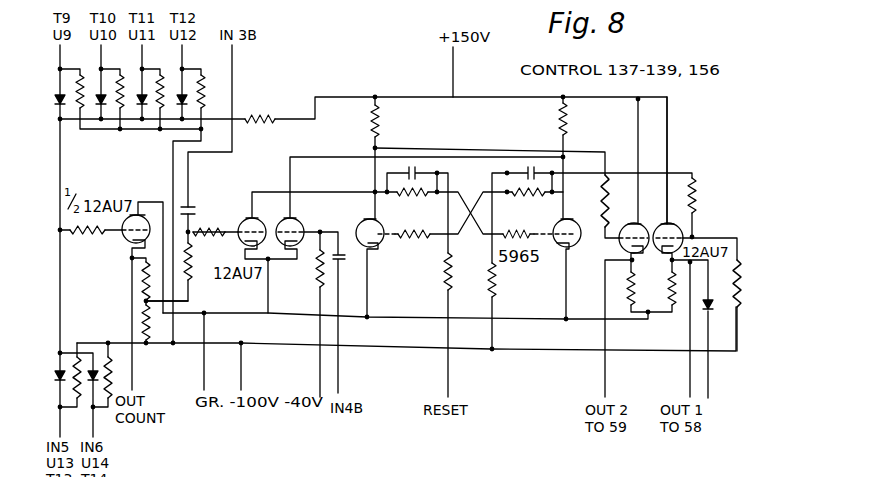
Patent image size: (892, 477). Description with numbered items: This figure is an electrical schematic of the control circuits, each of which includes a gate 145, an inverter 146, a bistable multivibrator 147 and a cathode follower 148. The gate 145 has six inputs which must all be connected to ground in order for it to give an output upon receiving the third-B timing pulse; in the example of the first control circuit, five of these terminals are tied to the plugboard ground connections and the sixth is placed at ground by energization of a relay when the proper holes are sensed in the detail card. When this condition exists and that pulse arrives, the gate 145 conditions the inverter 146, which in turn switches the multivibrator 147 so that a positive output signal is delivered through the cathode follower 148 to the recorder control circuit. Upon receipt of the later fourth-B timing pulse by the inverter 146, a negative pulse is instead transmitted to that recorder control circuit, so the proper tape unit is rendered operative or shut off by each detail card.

The gate 145 is at (122, 243).
The inverter 146 is at (288, 256).
The bistable multivibrator 147 is at (432, 240).
The cathode follower 148 is at (694, 236).